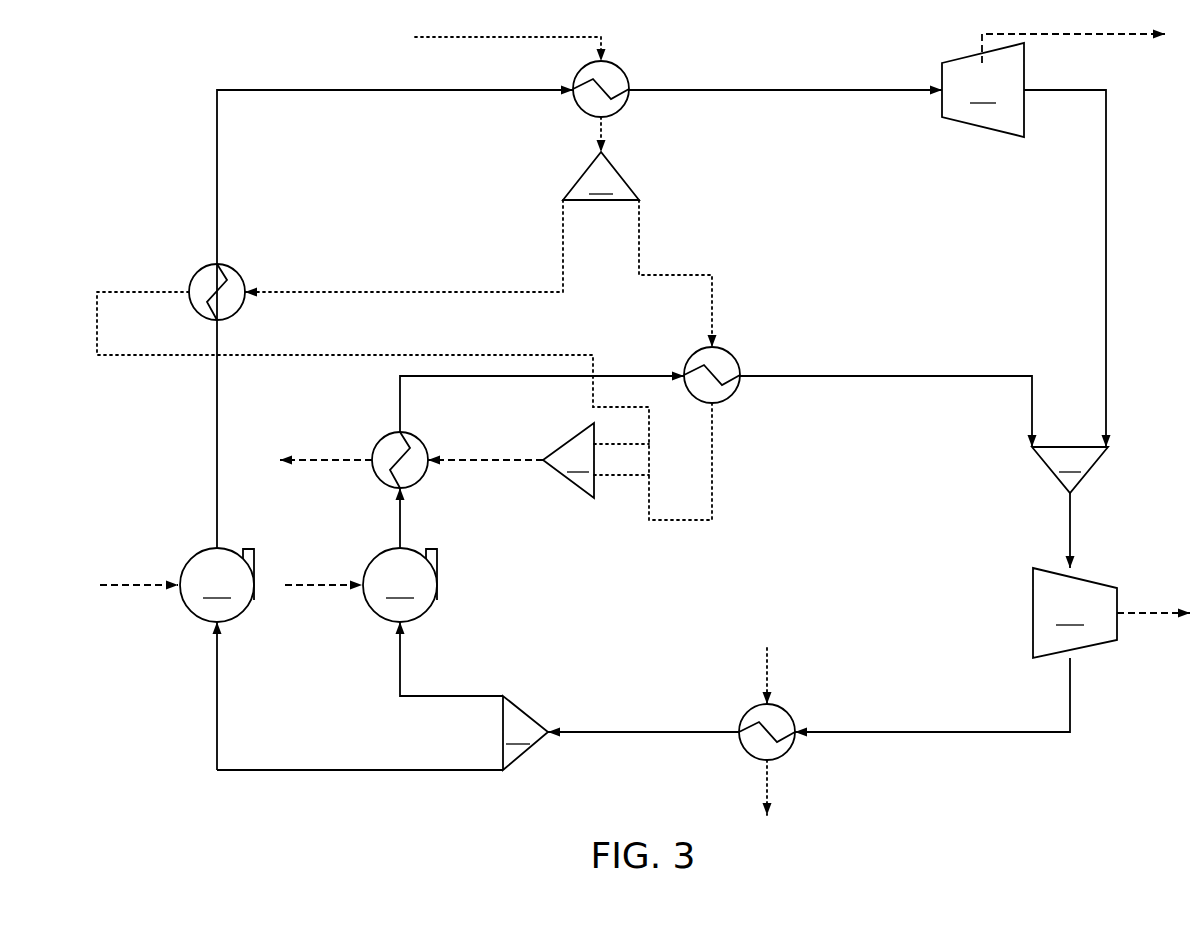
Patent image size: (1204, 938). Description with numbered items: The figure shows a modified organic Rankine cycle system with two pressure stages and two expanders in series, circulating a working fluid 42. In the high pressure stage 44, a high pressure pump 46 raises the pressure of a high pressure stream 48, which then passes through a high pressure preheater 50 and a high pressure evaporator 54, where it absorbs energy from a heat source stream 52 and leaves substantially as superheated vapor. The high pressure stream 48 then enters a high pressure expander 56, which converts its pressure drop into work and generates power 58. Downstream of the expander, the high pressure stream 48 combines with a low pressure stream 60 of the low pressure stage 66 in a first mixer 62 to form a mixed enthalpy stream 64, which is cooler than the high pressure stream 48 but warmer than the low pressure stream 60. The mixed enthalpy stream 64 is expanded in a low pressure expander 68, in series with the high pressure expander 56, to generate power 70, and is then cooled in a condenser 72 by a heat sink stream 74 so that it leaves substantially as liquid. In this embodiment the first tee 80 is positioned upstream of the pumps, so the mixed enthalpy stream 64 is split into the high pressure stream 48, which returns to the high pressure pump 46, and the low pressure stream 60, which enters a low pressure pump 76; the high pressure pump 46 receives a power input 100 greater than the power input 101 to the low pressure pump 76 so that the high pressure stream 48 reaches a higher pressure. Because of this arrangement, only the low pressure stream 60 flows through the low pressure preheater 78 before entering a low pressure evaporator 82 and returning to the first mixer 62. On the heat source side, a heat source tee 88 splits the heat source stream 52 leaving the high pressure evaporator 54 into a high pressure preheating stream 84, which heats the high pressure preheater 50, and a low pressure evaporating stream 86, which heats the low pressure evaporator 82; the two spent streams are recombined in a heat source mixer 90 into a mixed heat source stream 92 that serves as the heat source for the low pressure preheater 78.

The working fluid 42 is at (206, 137).
The high pressure stage 44 is at (802, 218).
The high pressure pump 46 is at (217, 585).
The high pressure stream 48 is at (273, 88).
The high pressure preheater 50 is at (191, 272).
The heat source stream 52 is at (438, 40).
The high pressure evaporator 54 is at (630, 74).
The high pressure expander 56 is at (983, 90).
The power 58 is at (1138, 40).
The low pressure stream 60 is at (613, 373).
The first mixer 62 is at (1070, 470).
The mixed enthalpy stream 64 is at (1066, 530).
The low pressure stage 66 is at (800, 573).
The low pressure expander 68 is at (1075, 613).
The power 70 is at (1140, 618).
The condenser 72 is at (746, 752).
The heat sink stream 74 is at (764, 662).
The low pressure pump 76 is at (400, 585).
The low pressure preheater 78 is at (426, 442).
The first tee 80 is at (525, 733).
The low pressure evaporator 82 is at (738, 356).
The high pressure preheating stream 84 is at (385, 290).
The low pressure evaporating stream 86 is at (641, 244).
The heat source tee 88 is at (601, 176).
The heat source mixer 90 is at (596, 460).
The mixed heat source stream 92 is at (319, 457).
The power input 100 is at (106, 580).
The power input 101 is at (312, 580).